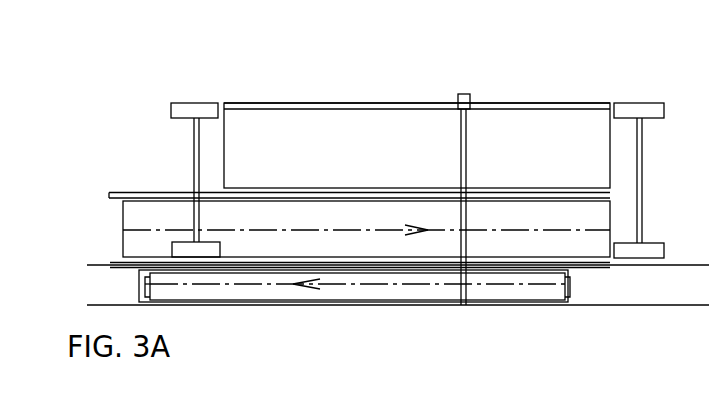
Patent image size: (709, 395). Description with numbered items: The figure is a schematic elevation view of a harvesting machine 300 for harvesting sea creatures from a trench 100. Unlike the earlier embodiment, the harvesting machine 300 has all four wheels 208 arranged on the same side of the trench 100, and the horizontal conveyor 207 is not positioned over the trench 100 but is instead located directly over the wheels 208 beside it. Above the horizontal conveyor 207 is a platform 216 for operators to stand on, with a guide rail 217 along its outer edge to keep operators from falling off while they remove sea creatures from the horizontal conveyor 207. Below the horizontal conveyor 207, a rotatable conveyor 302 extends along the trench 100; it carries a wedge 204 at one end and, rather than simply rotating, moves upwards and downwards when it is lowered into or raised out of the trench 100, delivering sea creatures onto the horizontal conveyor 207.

The trench 100 is at (657, 305).
The wedge 204 is at (568, 296).
The horizontal conveyor 207 is at (130, 212).
The wheels 208 is at (180, 112).
The platform 216 is at (388, 127).
The guide rail 217 is at (282, 107).
The harvesting machine 300 is at (537, 88).
The rotatable conveyor 302 is at (355, 293).